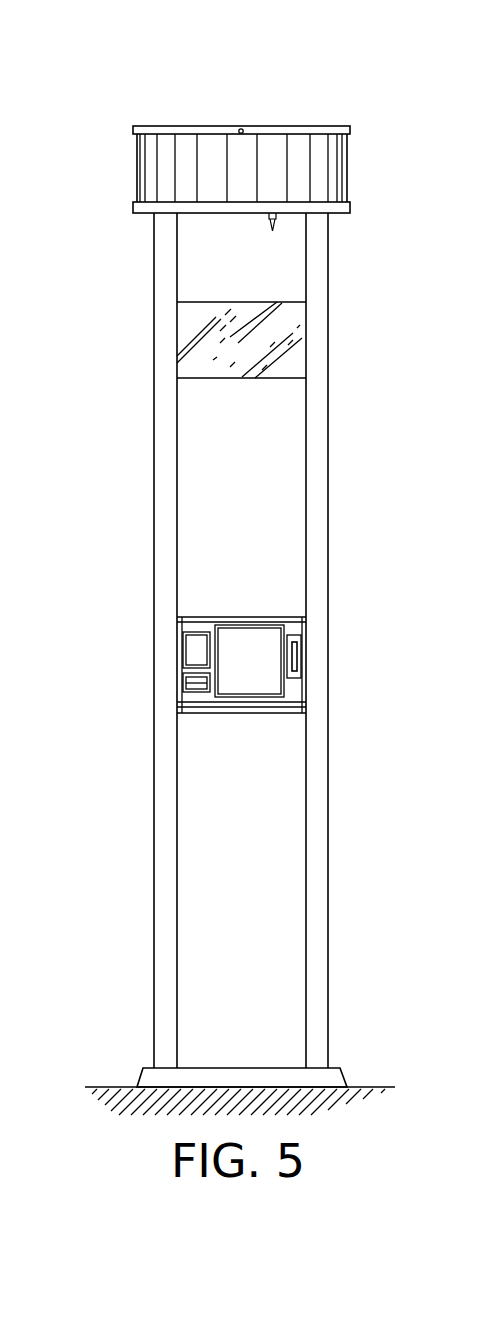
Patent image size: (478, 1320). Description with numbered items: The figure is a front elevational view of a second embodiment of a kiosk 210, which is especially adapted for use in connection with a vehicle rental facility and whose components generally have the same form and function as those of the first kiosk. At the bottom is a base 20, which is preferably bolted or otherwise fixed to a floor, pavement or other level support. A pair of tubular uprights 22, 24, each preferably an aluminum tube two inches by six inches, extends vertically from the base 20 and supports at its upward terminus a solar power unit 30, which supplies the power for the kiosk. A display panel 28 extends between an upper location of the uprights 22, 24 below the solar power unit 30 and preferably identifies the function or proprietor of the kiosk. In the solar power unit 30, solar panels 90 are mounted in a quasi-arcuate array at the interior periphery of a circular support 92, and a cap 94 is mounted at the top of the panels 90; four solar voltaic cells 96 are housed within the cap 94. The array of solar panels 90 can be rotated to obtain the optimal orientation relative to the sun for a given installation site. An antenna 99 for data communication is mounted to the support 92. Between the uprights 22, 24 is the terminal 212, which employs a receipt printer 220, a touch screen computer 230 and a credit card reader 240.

The kiosk 210 is at (140, 65).
The solar power unit 30 is at (283, 100).
The cap 94 is at (333, 130).
The circular support 92 is at (337, 208).
The solar panels 90 is at (188, 172).
The solar voltaic cells 96 is at (240, 127).
The antenna 99 is at (270, 225).
The display panel 28 is at (233, 363).
The tubular upright 22 is at (163, 905).
The tubular upright 24 is at (320, 903).
The terminal 212 is at (203, 619).
The receipt printer 220 is at (187, 680).
The touch screen computer 230 is at (257, 684).
The credit card reader 240 is at (297, 647).
The base 20 is at (242, 1073).